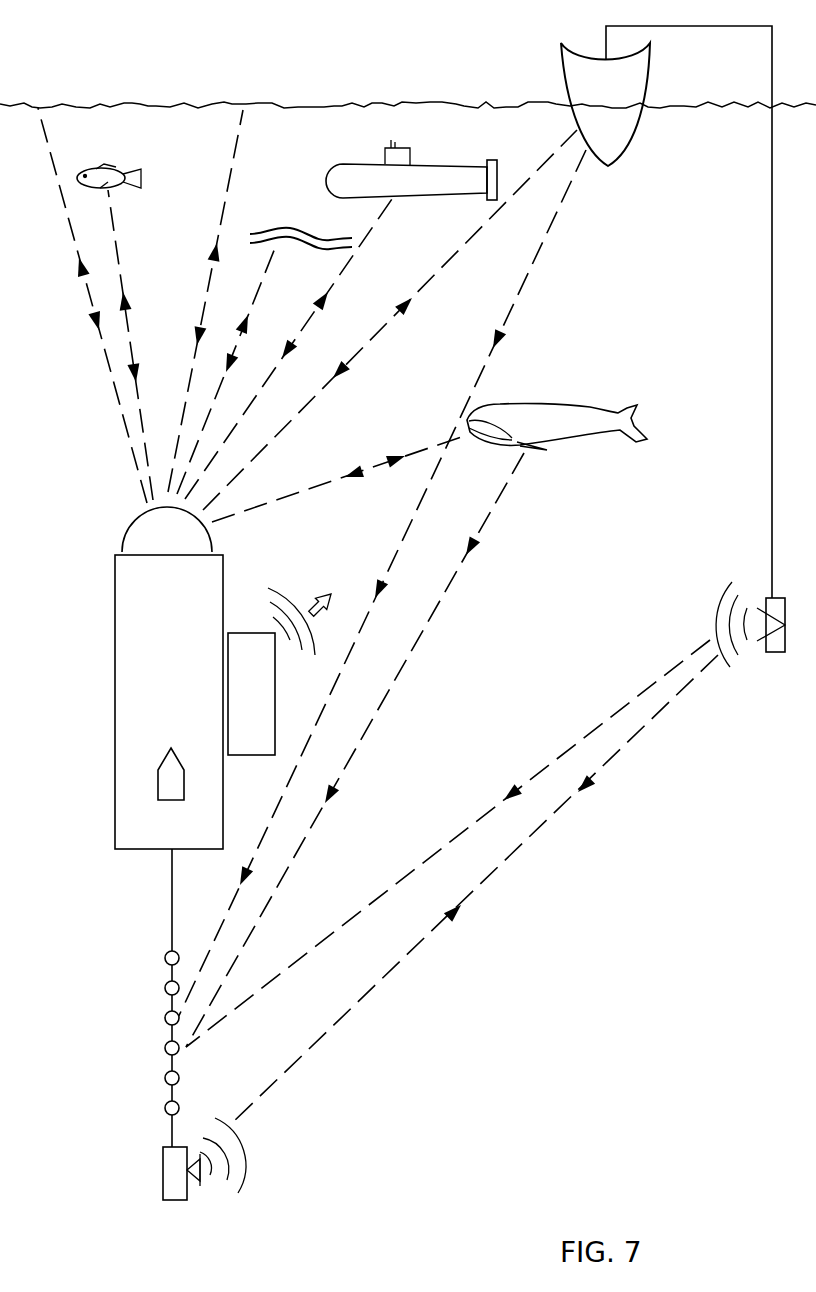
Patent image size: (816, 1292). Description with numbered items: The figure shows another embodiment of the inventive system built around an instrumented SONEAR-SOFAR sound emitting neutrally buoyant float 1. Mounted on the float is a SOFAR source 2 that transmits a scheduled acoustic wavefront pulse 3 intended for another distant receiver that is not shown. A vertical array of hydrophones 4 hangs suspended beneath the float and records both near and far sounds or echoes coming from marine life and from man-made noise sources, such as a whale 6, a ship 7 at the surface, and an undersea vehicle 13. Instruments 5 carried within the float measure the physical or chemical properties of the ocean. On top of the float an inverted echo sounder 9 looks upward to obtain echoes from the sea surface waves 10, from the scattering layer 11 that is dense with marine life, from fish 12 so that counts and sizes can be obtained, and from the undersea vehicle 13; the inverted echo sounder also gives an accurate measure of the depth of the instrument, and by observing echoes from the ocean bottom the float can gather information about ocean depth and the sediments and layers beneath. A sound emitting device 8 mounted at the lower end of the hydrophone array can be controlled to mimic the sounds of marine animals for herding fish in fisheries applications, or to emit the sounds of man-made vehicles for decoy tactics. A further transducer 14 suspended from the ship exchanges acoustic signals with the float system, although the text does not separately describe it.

The sound emitting neutrally buoyant float 1 is at (159, 702).
The SOFAR source 2 is at (264, 694).
The scheduled acoustic wavefront pulse 3 is at (300, 605).
The vertical array of hydrophones 4 is at (159, 998).
The instruments 5 is at (165, 761).
The whale 6 is at (558, 407).
The ship 7 is at (666, 312).
The sound emitting device 8 is at (188, 1163).
The inverted echo sounder 9 is at (156, 529).
The sea surface waves 10 is at (408, 84).
The scattering layer 11 is at (301, 221).
The fish 12 is at (112, 157).
The undersea vehicle 13 is at (411, 163).
The suspended transducer 14 is at (750, 607).